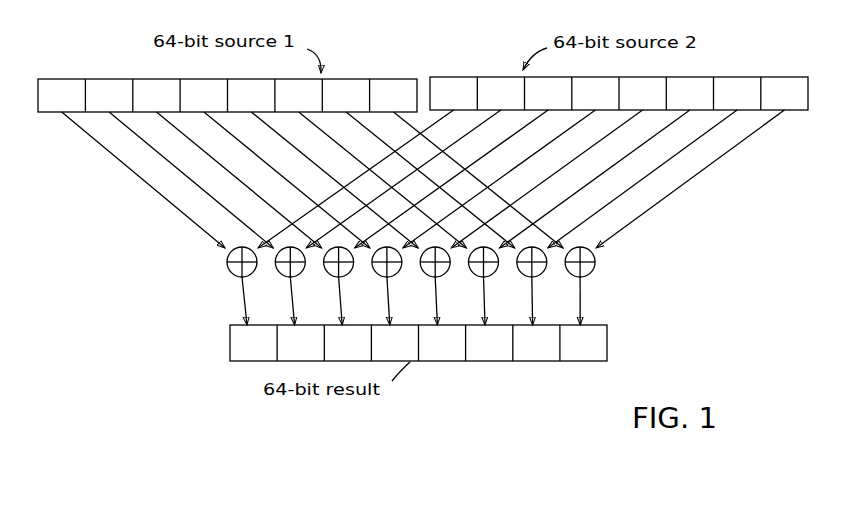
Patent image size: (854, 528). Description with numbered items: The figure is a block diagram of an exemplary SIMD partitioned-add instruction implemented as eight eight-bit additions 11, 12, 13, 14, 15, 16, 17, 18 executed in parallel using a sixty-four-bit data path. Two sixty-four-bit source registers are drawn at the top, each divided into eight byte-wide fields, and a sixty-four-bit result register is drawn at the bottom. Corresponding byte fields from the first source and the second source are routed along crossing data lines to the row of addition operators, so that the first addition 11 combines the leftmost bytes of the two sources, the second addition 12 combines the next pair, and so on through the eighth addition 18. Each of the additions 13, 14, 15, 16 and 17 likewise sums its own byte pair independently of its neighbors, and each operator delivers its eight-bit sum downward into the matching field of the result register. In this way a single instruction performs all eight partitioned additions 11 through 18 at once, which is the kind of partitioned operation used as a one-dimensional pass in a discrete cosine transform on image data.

The 8-bit addition 11 is at (235, 272).
The 8-bit addition 12 is at (283, 272).
The 8-bit addition 13 is at (332, 272).
The 8-bit addition 14 is at (378, 272).
The 8-bit addition 15 is at (424, 268).
The 8-bit addition 16 is at (472, 268).
The 8-bit addition 17 is at (522, 268).
The 8-bit addition 18 is at (585, 270).